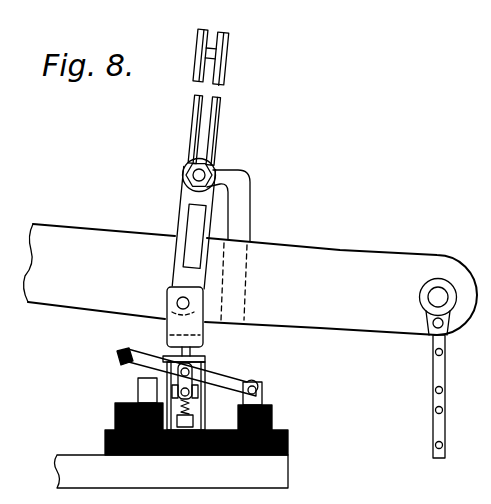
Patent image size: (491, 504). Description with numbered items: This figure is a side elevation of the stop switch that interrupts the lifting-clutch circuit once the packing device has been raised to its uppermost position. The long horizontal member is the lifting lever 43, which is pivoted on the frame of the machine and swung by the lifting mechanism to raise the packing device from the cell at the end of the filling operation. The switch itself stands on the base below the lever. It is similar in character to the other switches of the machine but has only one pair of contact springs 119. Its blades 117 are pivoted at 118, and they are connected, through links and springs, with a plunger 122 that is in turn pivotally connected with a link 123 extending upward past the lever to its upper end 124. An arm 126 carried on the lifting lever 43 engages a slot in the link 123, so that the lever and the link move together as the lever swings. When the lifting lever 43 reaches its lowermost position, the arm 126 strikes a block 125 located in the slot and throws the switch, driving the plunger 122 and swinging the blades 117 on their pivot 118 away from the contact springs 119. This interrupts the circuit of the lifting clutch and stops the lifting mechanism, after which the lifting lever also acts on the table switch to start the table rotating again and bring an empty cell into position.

The lifting lever 43 is at (250, 341).
The blades 117 is at (213, 376).
The pivot 118 is at (262, 390).
The contact springs 119 is at (138, 388).
The plunger 122 is at (165, 348).
The link 123 is at (213, 130).
The clevis 124 is at (216, 48).
The block 125 is at (192, 200).
The arm 126 is at (236, 220).